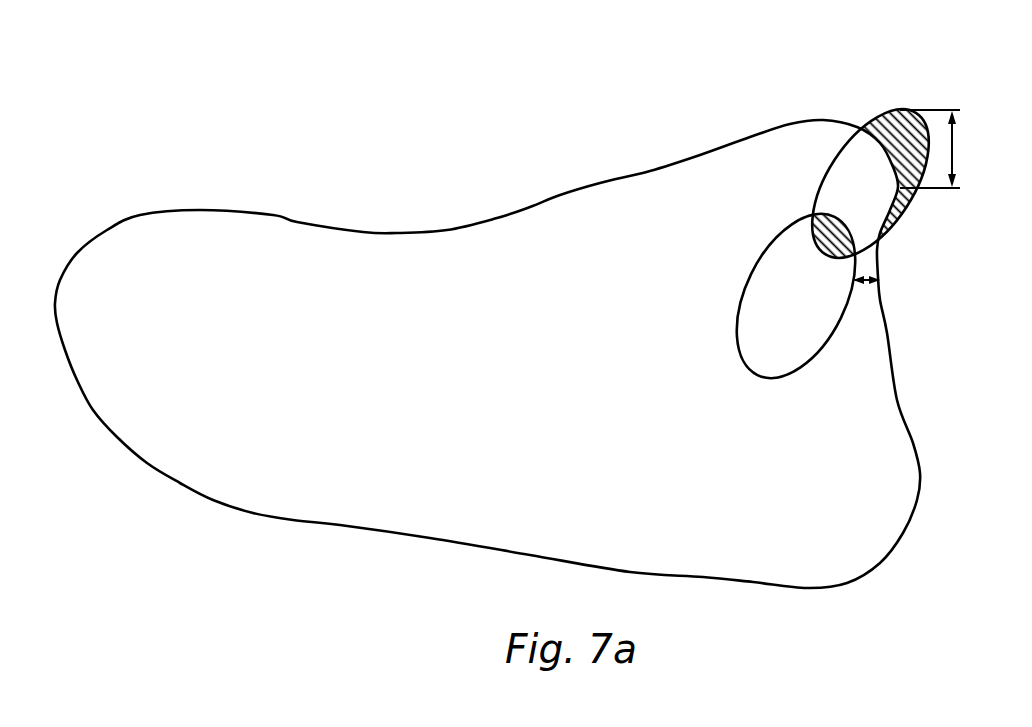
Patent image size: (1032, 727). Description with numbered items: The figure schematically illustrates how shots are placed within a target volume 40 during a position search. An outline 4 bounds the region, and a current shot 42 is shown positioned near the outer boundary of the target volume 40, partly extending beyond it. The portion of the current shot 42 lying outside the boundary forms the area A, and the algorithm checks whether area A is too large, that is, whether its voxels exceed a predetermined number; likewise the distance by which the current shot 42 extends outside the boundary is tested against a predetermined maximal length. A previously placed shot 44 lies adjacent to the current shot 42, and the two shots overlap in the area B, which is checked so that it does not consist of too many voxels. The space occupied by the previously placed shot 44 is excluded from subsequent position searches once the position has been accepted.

The target volume 40 is at (311, 148).
The outline of shoe sole 4 is at (507, 215).
The current shot 42 is at (843, 148).
The previously placed shot 44 is at (772, 376).
The area A is at (905, 127).
The area B is at (853, 243).